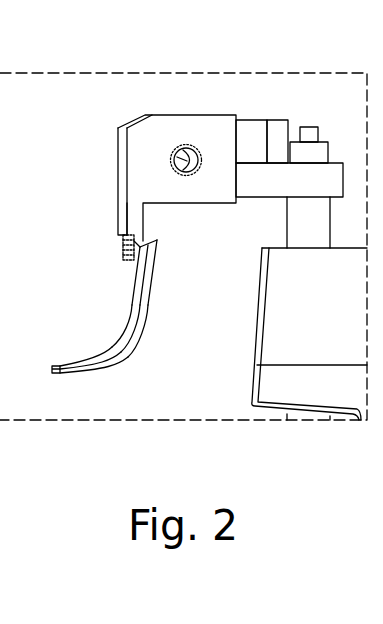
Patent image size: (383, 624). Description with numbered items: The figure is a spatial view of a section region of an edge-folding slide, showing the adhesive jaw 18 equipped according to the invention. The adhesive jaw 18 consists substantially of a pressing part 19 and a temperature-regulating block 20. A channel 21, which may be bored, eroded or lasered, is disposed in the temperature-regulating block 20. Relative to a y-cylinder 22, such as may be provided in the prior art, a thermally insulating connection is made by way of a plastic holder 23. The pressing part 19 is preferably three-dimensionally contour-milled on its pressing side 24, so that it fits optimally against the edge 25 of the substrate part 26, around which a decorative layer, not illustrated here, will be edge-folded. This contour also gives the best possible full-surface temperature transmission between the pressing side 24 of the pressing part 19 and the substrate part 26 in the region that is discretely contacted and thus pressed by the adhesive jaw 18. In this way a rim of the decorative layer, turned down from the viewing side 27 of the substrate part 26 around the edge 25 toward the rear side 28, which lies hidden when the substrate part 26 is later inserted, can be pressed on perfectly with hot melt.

The adhesive jaw 18 is at (174, 118).
The pressing part 19 is at (136, 205).
The temperature-regulating block 20 is at (217, 150).
The channel 21 is at (173, 162).
The y-cylinder 22 is at (315, 215).
The plastic holder 23 is at (260, 180).
The pressing side 24 is at (147, 228).
The edge 25 is at (150, 270).
The substrate part 26 is at (112, 364).
The viewing side 27 is at (92, 374).
The rear side 28 is at (128, 334).